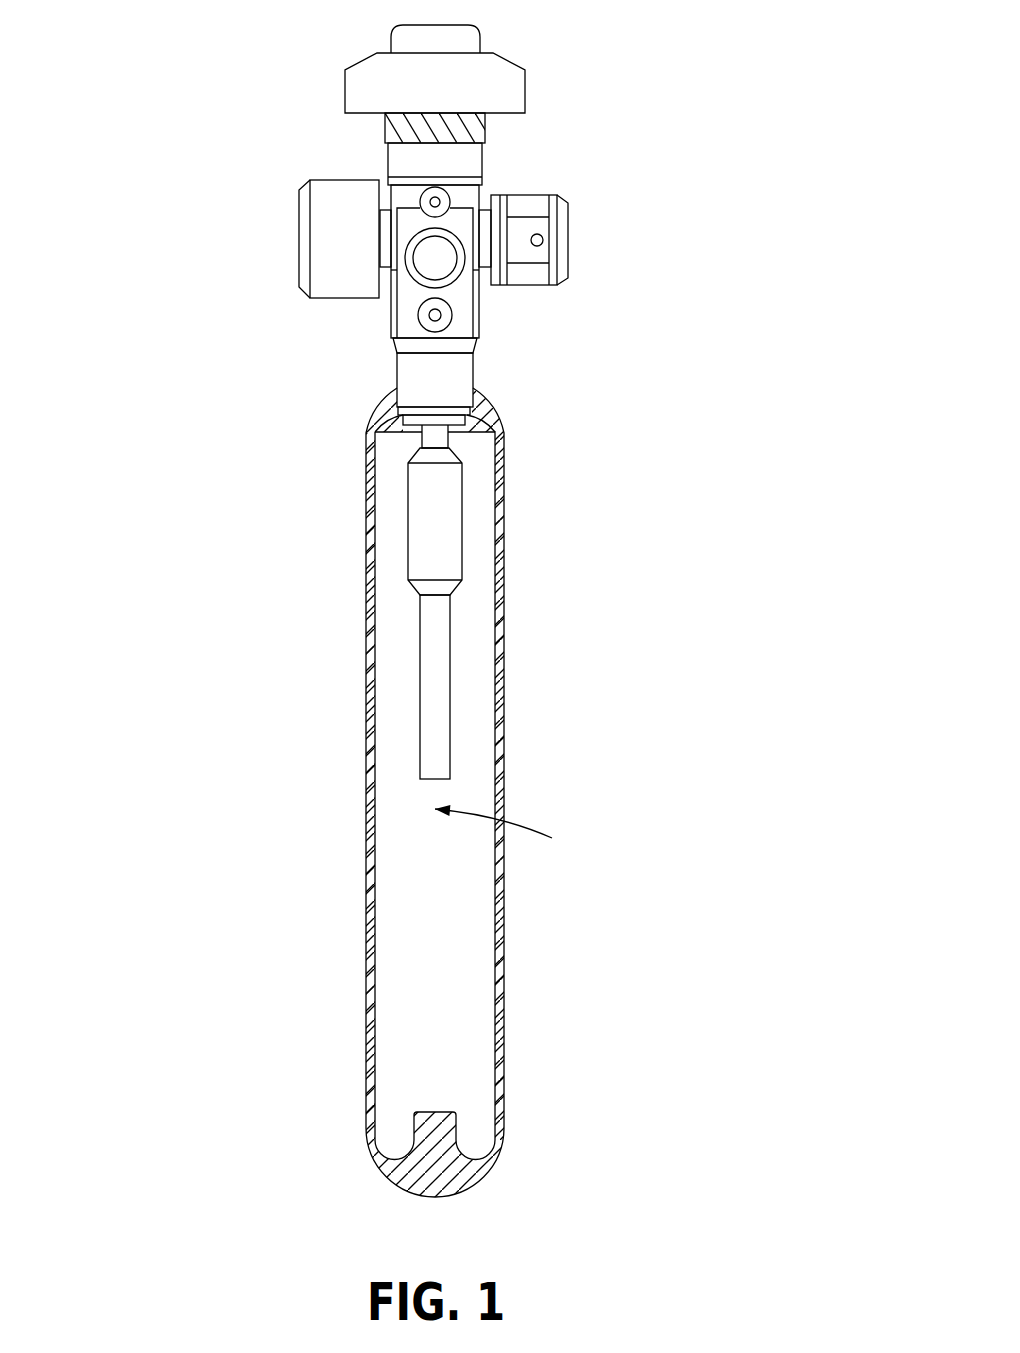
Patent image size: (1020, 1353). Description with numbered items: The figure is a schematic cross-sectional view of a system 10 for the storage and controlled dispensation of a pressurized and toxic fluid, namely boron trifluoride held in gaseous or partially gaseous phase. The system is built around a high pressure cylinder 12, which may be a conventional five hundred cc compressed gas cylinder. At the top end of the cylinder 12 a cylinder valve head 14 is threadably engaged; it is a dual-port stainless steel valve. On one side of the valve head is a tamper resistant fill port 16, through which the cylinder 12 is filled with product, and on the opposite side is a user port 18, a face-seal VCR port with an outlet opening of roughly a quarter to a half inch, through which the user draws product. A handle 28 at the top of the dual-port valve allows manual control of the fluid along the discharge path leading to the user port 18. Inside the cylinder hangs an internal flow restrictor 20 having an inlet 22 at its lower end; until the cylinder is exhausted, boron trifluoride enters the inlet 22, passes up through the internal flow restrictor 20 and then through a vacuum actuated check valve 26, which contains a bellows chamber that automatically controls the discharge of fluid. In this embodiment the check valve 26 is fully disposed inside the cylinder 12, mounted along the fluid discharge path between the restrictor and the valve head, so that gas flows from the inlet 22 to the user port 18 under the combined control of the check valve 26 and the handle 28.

The system 10 is at (357, 790).
The high pressure cylinder 12 is at (367, 608).
The cylinder valve head 14 is at (343, 128).
The tamper resistant fill port 16 is at (300, 238).
The user port 18 is at (568, 245).
The internal flow restrictor 20 is at (457, 655).
The inlet 22 is at (432, 780).
The vacuum actuated check valve 26 is at (457, 495).
The handle 28 is at (510, 60).